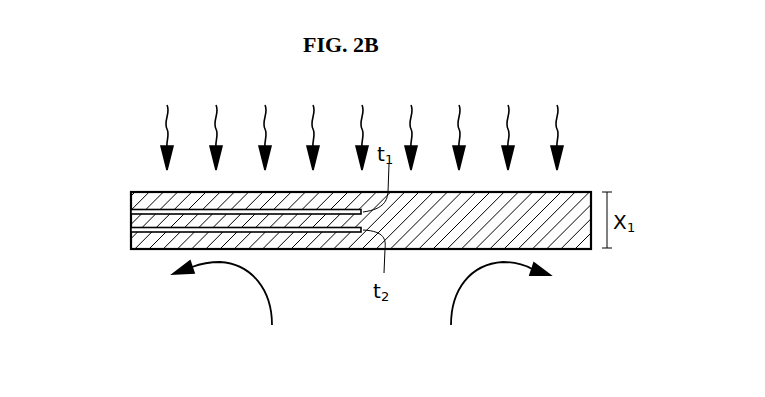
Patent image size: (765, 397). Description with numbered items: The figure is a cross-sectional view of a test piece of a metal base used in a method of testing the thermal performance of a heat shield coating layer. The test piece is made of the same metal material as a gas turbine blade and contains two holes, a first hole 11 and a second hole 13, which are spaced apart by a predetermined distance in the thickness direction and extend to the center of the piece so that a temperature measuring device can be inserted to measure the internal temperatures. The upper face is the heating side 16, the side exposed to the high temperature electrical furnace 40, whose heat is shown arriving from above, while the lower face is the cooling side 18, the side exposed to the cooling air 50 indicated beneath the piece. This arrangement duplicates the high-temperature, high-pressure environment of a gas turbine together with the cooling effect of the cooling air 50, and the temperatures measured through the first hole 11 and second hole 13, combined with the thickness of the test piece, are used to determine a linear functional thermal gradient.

The first hole 11 is at (131, 212).
The second hole 13 is at (131, 231).
The heating side 16 is at (571, 192).
The cooling side 18 is at (572, 249).
The high temperature electrical furnace 40 is at (162, 128).
The cooling air 50 is at (252, 287).